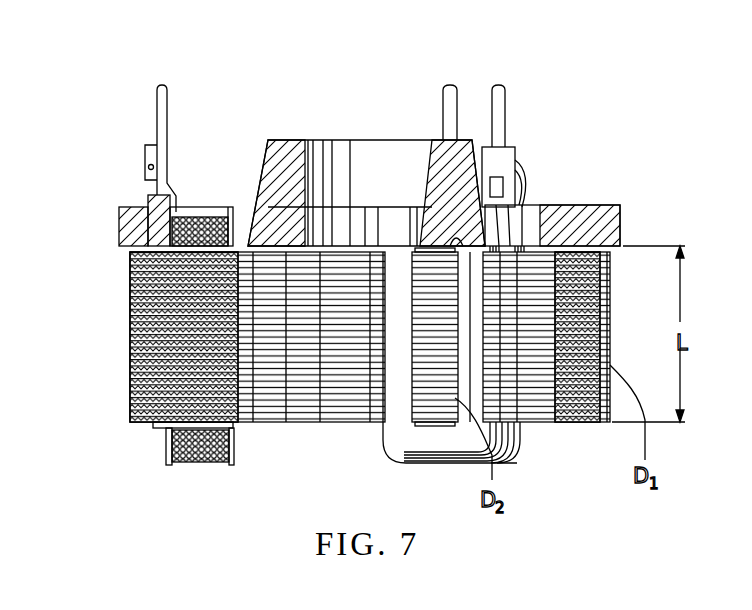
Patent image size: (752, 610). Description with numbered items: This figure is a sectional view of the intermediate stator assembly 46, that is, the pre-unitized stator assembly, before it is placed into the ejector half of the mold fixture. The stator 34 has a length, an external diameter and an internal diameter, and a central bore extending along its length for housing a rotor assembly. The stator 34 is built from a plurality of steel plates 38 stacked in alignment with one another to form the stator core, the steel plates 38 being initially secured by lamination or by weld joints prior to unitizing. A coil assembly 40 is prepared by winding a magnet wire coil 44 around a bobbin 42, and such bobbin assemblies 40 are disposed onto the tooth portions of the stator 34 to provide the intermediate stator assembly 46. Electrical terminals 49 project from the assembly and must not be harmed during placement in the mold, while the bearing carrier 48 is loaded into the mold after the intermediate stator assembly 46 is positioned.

The stator 34 is at (128, 272).
The steel plates 38 is at (128, 346).
The coil assembly 40 is at (160, 437).
The bobbin 42 is at (168, 463).
The magnet wire coil 44 is at (185, 462).
The intermediate stator assembly 46 is at (98, 106).
The bearing carrier 48 is at (282, 140).
The electrical terminals 49 is at (500, 88).